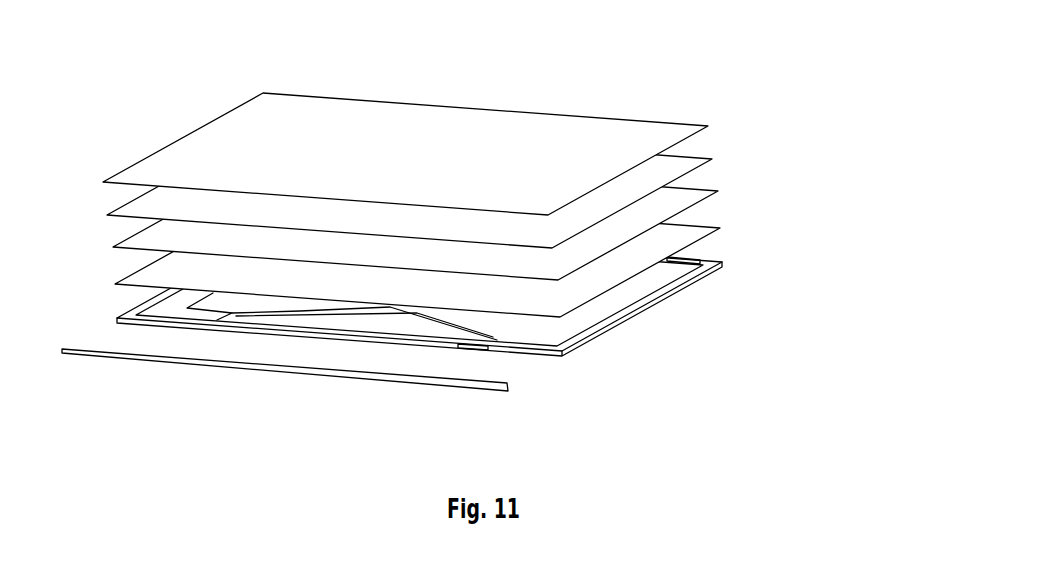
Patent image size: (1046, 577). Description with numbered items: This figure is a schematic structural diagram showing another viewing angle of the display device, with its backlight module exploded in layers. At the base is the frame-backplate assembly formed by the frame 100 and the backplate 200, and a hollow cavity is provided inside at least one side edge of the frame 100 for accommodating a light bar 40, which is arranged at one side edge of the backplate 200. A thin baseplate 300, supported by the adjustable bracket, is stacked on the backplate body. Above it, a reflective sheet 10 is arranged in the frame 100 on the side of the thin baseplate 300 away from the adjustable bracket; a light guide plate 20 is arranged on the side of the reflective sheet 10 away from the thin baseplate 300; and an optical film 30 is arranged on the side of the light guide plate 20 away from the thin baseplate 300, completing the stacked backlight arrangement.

The reflective sheet 10 is at (693, 205).
The light guide plate 20 is at (714, 158).
The optical film 30 is at (638, 137).
The light bar 40 is at (345, 377).
The frame 100 is at (602, 330).
The backplate 200 is at (540, 338).
The thin baseplate 300 is at (695, 237).